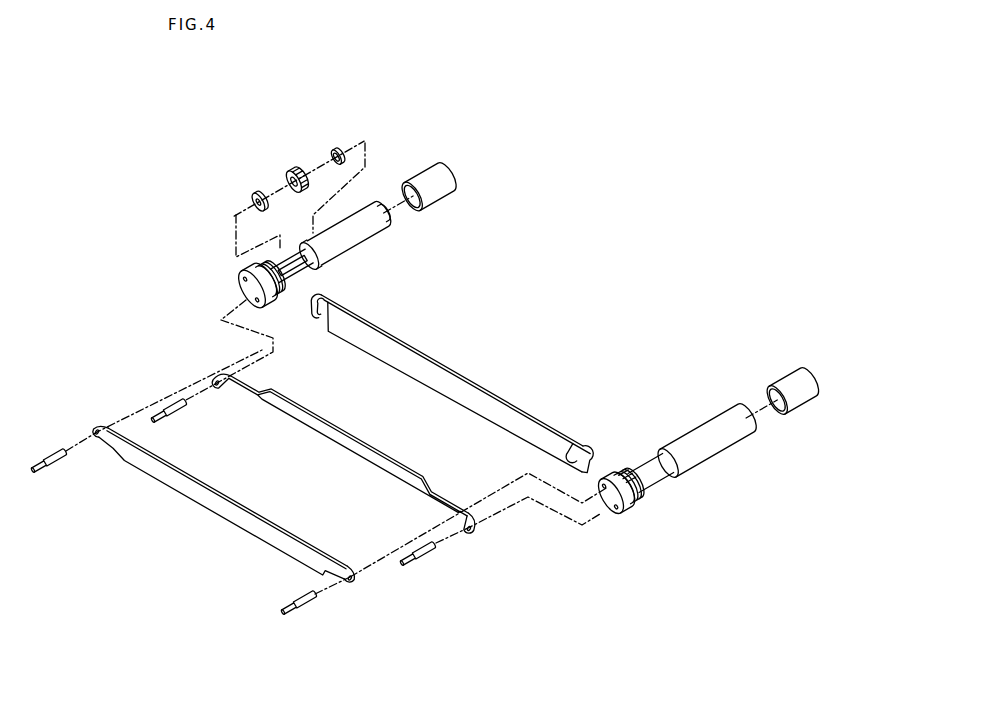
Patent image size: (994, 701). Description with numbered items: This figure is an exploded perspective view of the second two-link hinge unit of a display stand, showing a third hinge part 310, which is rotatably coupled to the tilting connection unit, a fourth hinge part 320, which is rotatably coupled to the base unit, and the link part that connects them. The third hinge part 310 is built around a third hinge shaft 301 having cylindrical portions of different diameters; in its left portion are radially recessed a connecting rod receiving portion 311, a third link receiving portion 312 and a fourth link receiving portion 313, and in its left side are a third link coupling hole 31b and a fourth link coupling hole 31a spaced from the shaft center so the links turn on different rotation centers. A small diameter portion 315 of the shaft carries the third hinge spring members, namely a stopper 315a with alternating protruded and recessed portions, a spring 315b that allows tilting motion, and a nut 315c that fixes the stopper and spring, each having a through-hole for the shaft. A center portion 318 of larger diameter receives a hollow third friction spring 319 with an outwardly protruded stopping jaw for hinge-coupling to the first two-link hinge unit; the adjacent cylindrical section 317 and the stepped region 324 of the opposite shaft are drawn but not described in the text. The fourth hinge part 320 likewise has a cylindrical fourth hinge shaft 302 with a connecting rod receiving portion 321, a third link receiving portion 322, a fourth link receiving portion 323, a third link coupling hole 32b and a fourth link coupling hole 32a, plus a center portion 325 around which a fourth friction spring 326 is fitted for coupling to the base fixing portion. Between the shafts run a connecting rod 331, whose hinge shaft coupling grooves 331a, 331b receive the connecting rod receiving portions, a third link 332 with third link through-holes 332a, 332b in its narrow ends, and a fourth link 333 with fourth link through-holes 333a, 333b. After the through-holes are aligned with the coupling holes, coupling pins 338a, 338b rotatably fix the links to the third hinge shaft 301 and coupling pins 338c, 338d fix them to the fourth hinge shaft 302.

The third hinge part 310 is at (412, 125).
The third hinge shaft 301 is at (216, 299).
The connecting rod receiving portion 311 is at (300, 280).
The fourth link coupling hole 31a is at (243, 282).
The third link coupling hole 31b is at (245, 303).
The third link receiving portion 312 is at (265, 266).
The fourth link receiving portion 313 is at (272, 273).
The small diameter portion 315 is at (322, 263).
The stopper 315a is at (257, 192).
The spring 315b is at (297, 168).
The nut 315c is at (336, 150).
The cylinder 317 is at (340, 246).
The center portion 318 is at (376, 200).
The third friction spring 319 is at (450, 185).
The fourth hinge part 320 is at (742, 383).
The fourth hinge shaft 302 is at (600, 522).
The connecting rod receiving portion 321 is at (652, 483).
The fourth link coupling hole 32a is at (612, 486).
The third link coupling hole 32b is at (612, 510).
The third link receiving portion 322 is at (624, 472).
The fourth link receiving portion 323 is at (612, 468).
The stepped portion 324 is at (668, 473).
The center portion 325 is at (705, 430).
The fourth friction spring 326 is at (806, 392).
The connecting rod 331 is at (415, 343).
The hinge shaft coupling groove 331a is at (316, 322).
The hinge shaft coupling groove 331b is at (562, 448).
The third link 332 is at (345, 432).
The third link through-hole 332a is at (215, 380).
The third link through-hole 332b is at (470, 532).
The fourth link 333 is at (245, 506).
The fourth link through-hole 333a is at (97, 430).
The fourth link through-hole 333b is at (352, 582).
The coupling pin 338a is at (173, 413).
The coupling pin 338b is at (57, 462).
The coupling pin 338c is at (418, 558).
The coupling pin 338d is at (297, 616).